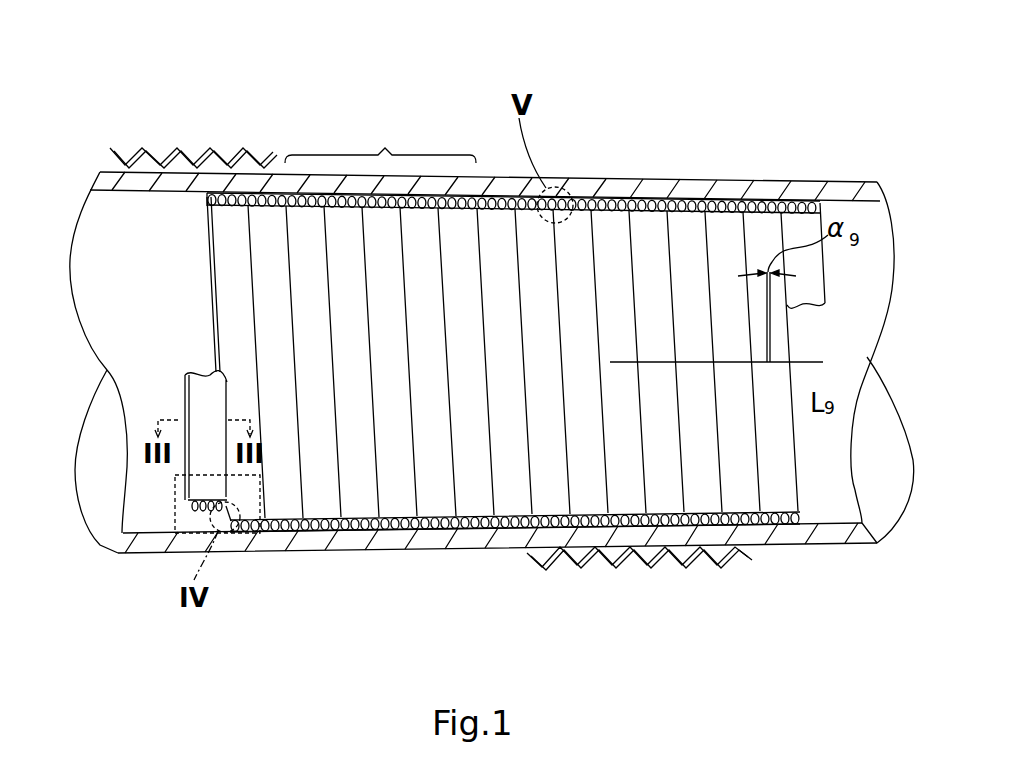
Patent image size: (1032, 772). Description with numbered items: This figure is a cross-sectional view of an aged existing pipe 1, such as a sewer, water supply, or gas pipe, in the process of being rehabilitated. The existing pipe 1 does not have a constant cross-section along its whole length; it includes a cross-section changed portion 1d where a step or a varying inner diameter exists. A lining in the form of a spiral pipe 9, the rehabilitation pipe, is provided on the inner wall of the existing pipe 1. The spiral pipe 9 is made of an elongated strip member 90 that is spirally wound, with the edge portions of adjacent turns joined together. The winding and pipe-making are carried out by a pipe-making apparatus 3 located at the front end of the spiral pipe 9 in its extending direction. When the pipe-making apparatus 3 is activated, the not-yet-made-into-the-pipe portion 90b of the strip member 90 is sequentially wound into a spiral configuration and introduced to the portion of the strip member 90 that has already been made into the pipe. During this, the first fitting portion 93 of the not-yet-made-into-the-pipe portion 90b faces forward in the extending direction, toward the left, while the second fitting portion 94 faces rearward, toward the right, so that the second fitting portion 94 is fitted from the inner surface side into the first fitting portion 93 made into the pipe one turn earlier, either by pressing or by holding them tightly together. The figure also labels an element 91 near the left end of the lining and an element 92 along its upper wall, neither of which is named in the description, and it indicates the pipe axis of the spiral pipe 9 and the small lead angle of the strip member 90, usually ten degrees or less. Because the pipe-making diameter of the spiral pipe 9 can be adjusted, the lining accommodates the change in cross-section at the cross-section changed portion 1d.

The existing pipe 1 is at (735, 181).
The cross-section changed portion 1d is at (380, 144).
The pipe-making apparatus 3 is at (176, 487).
The spiral pipe 9 is at (764, 523).
The strip member 90 is at (200, 373).
The not-yet-made-into-the-pipe portion 90b is at (185, 410).
The first end of spring 91 is at (224, 205).
The upper end coil portion 92 is at (652, 200).
The first fitting portion 93 is at (190, 506).
The second fitting portion 94 is at (228, 506).